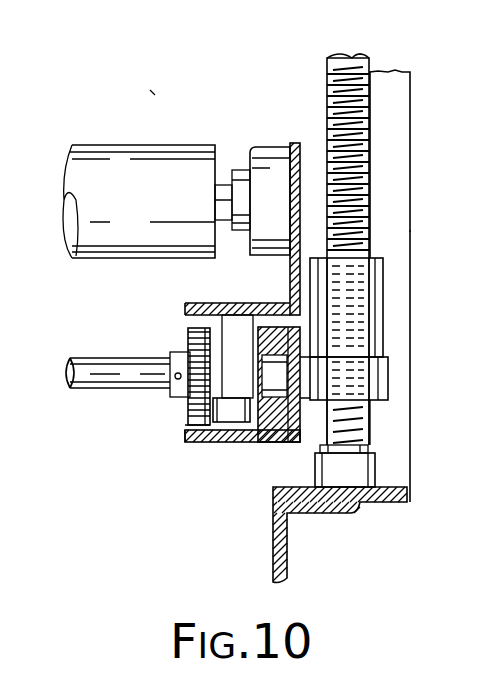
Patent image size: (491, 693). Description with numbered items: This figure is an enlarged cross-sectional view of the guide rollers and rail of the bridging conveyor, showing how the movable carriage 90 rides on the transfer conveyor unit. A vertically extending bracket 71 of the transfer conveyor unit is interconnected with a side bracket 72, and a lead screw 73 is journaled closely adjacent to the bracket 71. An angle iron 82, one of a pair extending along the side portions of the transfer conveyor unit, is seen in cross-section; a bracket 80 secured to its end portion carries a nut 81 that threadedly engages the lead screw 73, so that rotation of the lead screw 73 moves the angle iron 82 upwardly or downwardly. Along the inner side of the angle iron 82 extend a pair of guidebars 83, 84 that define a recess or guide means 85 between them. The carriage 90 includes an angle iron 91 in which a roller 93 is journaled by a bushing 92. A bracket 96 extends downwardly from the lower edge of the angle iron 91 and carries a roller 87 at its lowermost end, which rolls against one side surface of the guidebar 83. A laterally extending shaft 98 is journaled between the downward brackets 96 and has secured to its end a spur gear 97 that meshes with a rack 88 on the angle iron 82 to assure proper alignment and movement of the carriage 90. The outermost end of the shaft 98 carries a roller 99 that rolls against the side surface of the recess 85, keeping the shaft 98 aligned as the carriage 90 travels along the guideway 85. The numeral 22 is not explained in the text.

The frame 22 is at (450, 230).
The vertically extending bracket 71 is at (400, 102).
The side bracket 72 is at (330, 508).
The lead screw 73 is at (333, 58).
The bracket 80 is at (378, 375).
The nut 81 is at (373, 297).
The angle iron 82 is at (340, 440).
The guidebar 83 is at (325, 430).
The guidebar 84 is at (285, 340).
The recess or guide means 85 is at (258, 360).
The roller 87 is at (228, 415).
The rack 88 is at (185, 427).
The carriage 90 is at (175, 101).
The angle iron 91 is at (296, 142).
The bushing 92 is at (277, 173).
The roller 93 is at (125, 165).
The bracket 96 is at (230, 334).
The spur gear 97 is at (190, 345).
The shaft 98 is at (110, 375).
The roller 99 is at (270, 427).